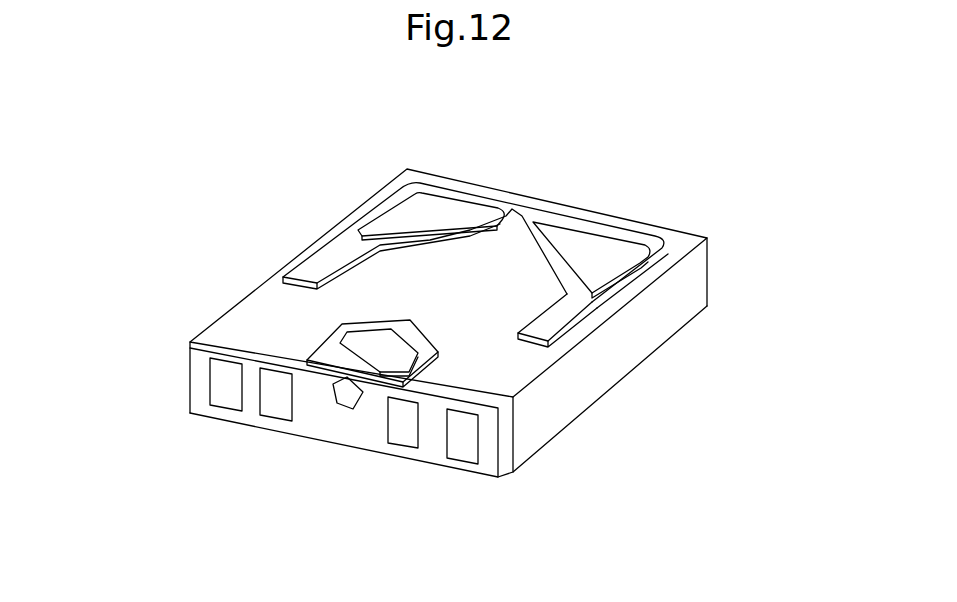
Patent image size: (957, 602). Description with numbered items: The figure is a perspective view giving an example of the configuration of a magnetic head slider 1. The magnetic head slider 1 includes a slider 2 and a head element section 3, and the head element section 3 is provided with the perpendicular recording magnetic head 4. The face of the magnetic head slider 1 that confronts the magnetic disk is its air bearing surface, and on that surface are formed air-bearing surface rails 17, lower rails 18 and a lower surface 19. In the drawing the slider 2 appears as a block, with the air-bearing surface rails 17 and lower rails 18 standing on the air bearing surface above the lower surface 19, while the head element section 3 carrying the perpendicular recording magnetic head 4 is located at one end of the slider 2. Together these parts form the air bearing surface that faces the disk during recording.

The magnetic head slider 1 is at (335, 195).
The slider 2 is at (530, 418).
The head element section 3 is at (508, 470).
The perpendicular recording magnetic head 4 is at (343, 410).
The air-bearing surface rails 17 is at (605, 250).
The lower rails 18 is at (575, 303).
The lower surface 19 is at (253, 310).